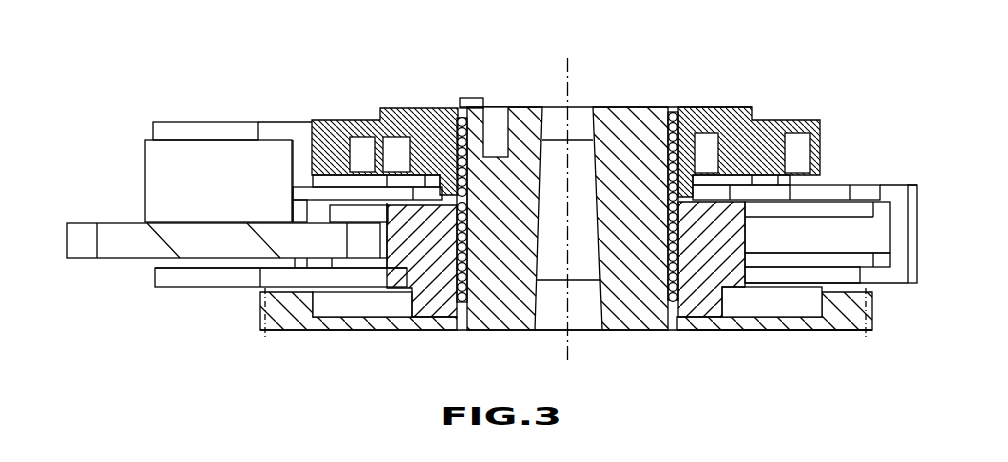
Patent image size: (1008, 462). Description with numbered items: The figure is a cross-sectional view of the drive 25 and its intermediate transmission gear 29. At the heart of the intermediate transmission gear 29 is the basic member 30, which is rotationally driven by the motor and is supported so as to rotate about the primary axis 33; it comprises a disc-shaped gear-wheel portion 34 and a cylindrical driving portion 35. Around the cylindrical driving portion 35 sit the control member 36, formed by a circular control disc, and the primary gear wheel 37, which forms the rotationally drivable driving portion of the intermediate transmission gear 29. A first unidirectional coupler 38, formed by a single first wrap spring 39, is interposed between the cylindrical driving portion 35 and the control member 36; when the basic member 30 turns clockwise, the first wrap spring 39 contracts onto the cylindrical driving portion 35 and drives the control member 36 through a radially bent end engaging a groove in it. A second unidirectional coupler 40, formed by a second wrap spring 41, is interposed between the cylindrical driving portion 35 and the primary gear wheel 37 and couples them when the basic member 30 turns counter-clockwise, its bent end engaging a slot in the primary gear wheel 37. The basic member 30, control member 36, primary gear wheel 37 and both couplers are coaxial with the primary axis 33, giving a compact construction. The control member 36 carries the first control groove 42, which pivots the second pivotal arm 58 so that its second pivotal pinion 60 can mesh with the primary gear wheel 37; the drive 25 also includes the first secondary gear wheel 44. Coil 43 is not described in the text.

The drive 25 is at (206, 86).
The intermediate transmission gear 29 is at (696, 349).
The basic member 30 is at (598, 333).
The primary axis 33 is at (568, 106).
The gear-wheel portion 34 is at (860, 322).
The cylindrical driving portion 35 is at (628, 116).
The control member 36 is at (762, 125).
The primary gear wheel 37 is at (430, 295).
The first unidirectional coupler 38 is at (543, 99).
The first wrap spring 39 is at (477, 184).
The second unidirectional coupler 40 is at (478, 239).
The second wrap spring 41 is at (470, 285).
The first control groove 42 is at (372, 150).
The coil 43 is at (405, 150).
The first secondary gear wheel 44 is at (122, 238).
The second pivotal arm 58 is at (880, 191).
The second pivotal pinion 60 is at (838, 232).